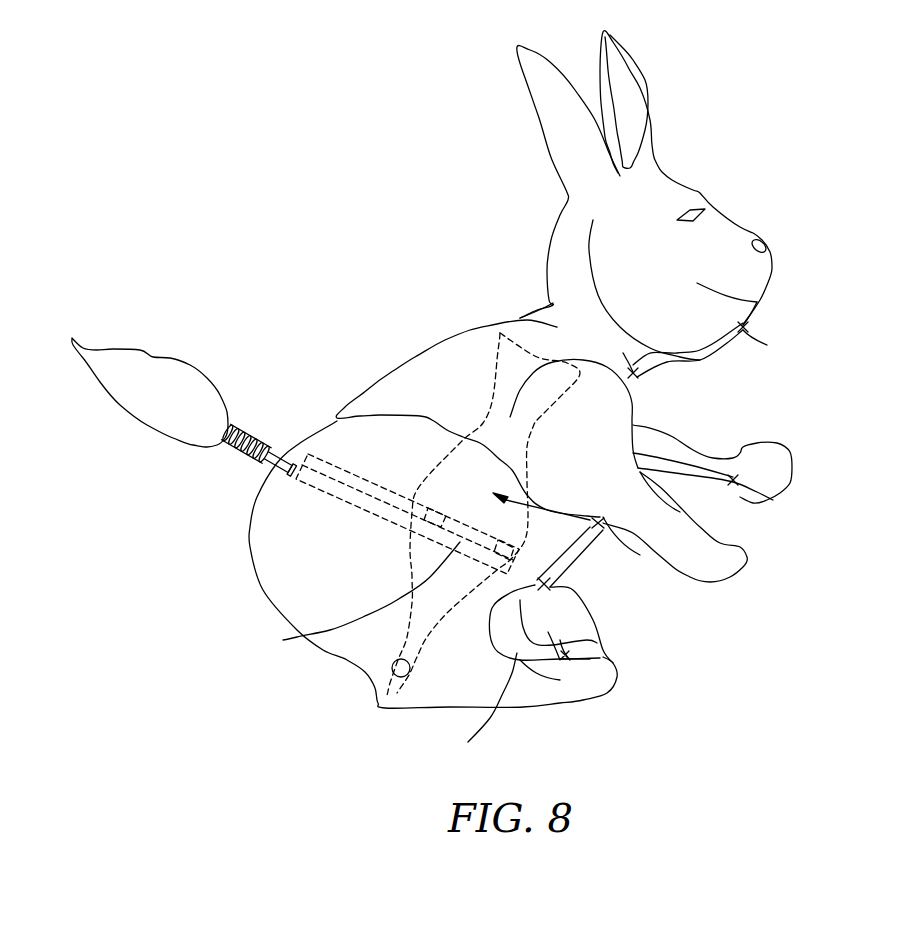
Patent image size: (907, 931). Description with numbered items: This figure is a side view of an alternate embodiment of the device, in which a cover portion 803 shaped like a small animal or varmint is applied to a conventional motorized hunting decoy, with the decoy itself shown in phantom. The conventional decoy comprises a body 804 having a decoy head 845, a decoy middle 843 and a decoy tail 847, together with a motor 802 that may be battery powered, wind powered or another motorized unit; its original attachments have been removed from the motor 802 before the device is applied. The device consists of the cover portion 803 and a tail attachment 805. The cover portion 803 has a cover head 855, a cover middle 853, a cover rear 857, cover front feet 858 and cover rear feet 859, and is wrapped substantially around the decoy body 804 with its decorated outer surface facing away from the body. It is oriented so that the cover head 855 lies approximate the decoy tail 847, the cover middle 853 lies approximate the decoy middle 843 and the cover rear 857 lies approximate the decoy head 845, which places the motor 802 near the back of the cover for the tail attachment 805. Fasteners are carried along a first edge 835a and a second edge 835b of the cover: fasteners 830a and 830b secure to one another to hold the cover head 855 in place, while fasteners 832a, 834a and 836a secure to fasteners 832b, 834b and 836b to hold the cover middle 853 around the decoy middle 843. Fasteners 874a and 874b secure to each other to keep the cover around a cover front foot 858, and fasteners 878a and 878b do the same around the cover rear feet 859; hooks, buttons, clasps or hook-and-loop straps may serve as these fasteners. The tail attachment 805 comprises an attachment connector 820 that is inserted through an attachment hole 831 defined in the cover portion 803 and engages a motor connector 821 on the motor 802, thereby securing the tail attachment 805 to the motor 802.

The motor 802 is at (300, 644).
The cover portion 803 is at (410, 340).
The body 804 is at (595, 530).
The tail attachment 805 is at (148, 401).
The attachment connector 820 is at (257, 418).
The motor connector 821 is at (387, 510).
The fastener 830a is at (762, 303).
The fastener 830b is at (747, 333).
The attachment hole 831 is at (295, 460).
The fastener 832a is at (640, 347).
The fastener 832b is at (638, 378).
The fastener 834a is at (603, 527).
The fastener 834b is at (605, 530).
The first edge 835a is at (585, 535).
The second edge 835b is at (580, 540).
The fastener 836a is at (575, 545).
The fastener 836b is at (570, 550).
The decoy middle 843 is at (450, 468).
The decoy head 845 is at (390, 670).
The decoy tail 847 is at (513, 353).
The cover middle 853 is at (457, 347).
The cover head 855 is at (660, 212).
The cover rear 857 is at (267, 557).
The cover front feet 858 is at (740, 568).
The cover rear feet 859 is at (507, 642).
The fastener 874a is at (740, 453).
The fastener 874b is at (750, 507).
The fastener 878a is at (548, 632).
The fastener 878b is at (560, 640).